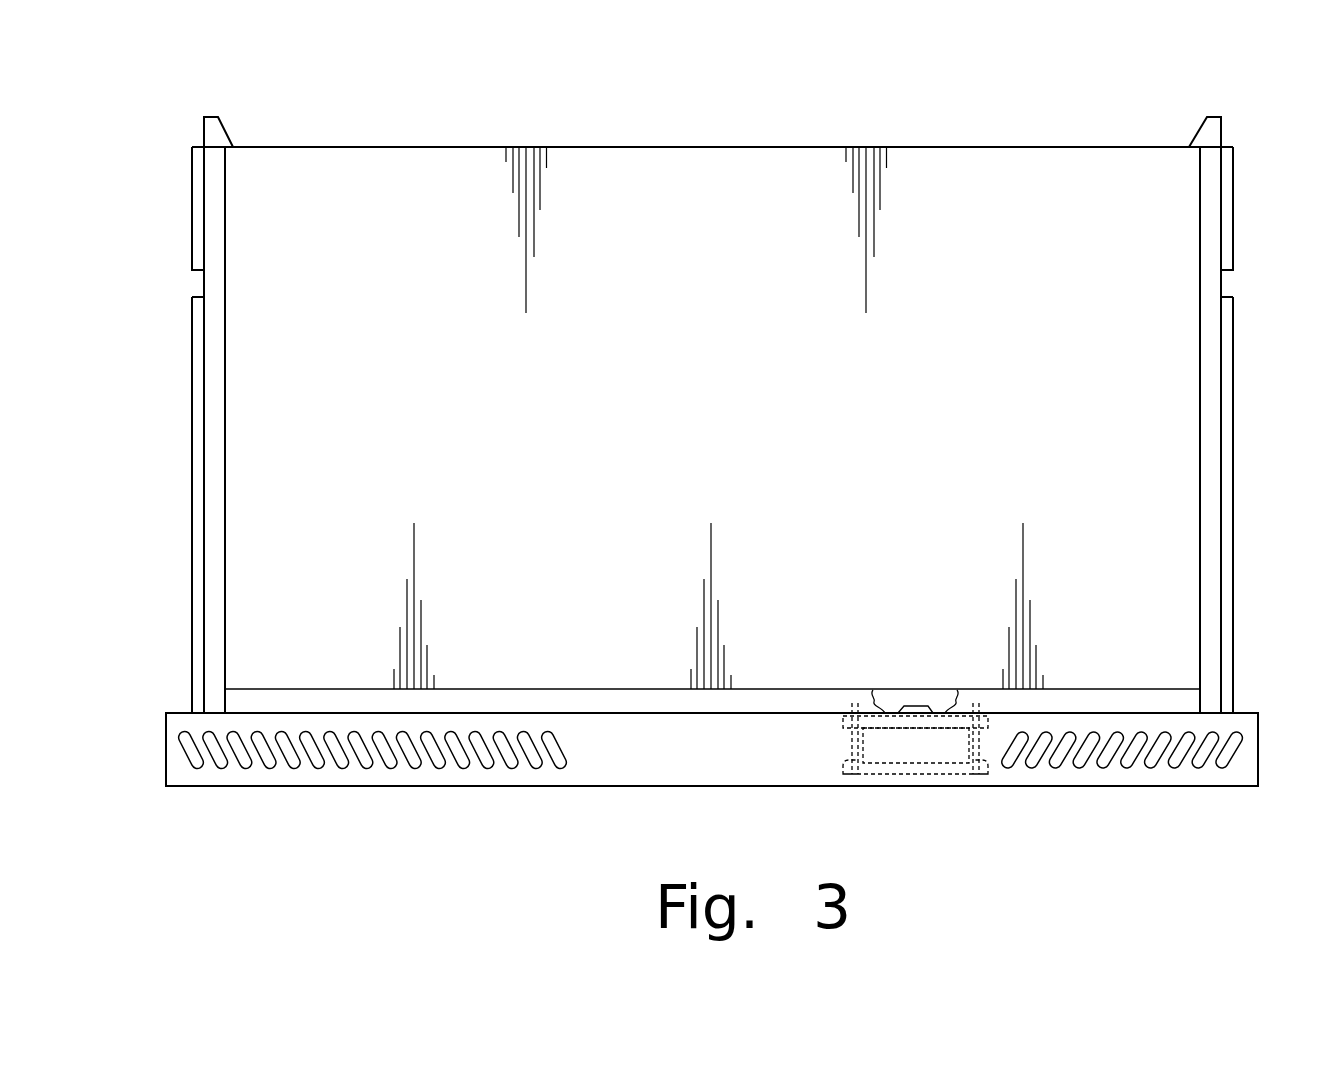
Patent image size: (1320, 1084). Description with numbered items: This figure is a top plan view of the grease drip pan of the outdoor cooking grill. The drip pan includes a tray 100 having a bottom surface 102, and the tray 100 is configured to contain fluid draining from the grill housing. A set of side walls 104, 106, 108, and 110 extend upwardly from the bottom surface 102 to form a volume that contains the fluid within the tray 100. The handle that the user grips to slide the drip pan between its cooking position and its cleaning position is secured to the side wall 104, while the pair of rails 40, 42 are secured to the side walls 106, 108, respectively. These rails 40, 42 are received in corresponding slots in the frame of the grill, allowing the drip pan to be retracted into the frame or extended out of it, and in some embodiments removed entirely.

The tray 100 is at (715, 430).
The bottom surface 102 is at (931, 162).
The side wall 104 is at (937, 713).
The side wall 106 is at (225, 620).
The side wall 108 is at (1200, 600).
The side wall 110 is at (426, 147).
The rail 40 is at (198, 430).
The rail 42 is at (1233, 348).